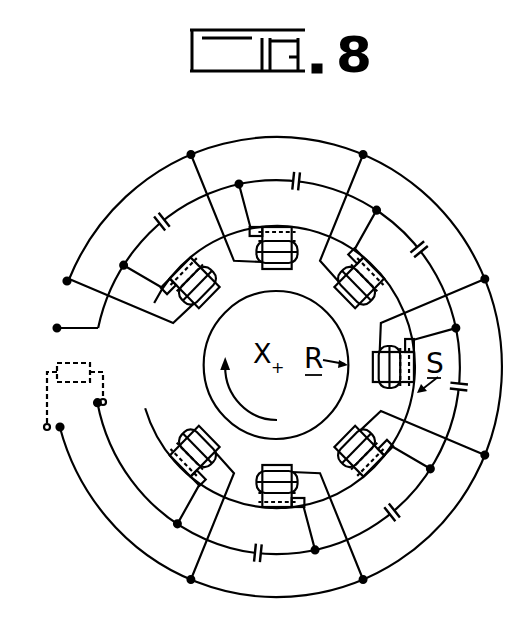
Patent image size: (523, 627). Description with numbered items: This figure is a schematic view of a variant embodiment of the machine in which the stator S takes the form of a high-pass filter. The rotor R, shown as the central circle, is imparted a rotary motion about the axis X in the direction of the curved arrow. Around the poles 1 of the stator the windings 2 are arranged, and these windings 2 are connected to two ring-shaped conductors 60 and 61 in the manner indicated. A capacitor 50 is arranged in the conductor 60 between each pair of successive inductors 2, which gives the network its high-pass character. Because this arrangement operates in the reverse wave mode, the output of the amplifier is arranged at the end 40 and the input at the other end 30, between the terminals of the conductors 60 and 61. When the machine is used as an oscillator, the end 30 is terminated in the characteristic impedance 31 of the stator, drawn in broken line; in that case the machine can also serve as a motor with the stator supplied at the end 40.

The pole 1 is at (203, 306).
The winding 2 is at (213, 276).
The end 30 is at (75, 408).
The characteristic impedance 31 is at (78, 362).
The end 40 is at (64, 302).
The capacitor 50 is at (438, 254).
The conductor 60 is at (267, 180).
The conductor 61 is at (283, 136).